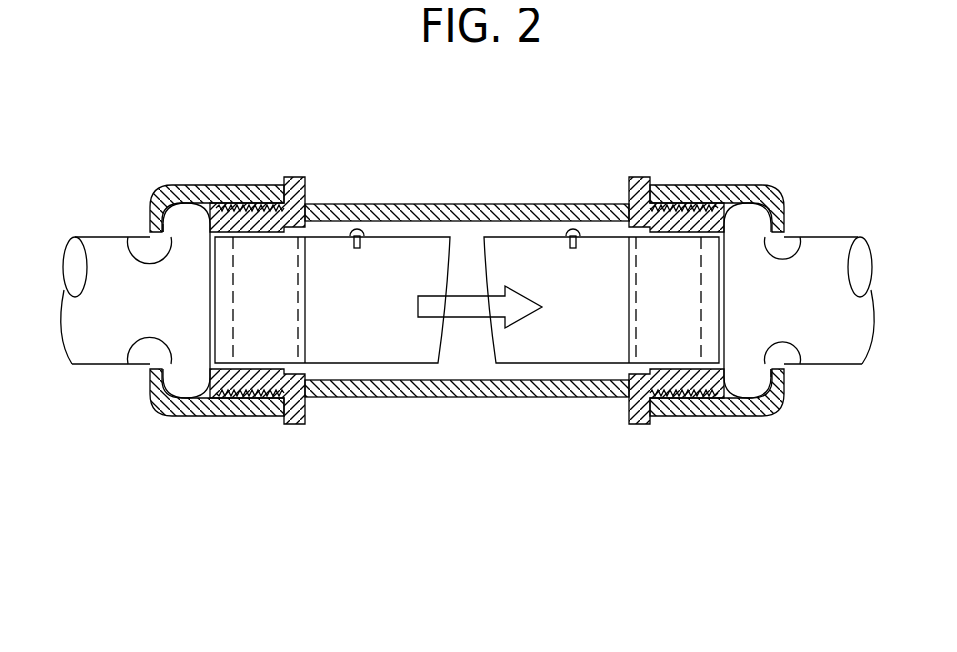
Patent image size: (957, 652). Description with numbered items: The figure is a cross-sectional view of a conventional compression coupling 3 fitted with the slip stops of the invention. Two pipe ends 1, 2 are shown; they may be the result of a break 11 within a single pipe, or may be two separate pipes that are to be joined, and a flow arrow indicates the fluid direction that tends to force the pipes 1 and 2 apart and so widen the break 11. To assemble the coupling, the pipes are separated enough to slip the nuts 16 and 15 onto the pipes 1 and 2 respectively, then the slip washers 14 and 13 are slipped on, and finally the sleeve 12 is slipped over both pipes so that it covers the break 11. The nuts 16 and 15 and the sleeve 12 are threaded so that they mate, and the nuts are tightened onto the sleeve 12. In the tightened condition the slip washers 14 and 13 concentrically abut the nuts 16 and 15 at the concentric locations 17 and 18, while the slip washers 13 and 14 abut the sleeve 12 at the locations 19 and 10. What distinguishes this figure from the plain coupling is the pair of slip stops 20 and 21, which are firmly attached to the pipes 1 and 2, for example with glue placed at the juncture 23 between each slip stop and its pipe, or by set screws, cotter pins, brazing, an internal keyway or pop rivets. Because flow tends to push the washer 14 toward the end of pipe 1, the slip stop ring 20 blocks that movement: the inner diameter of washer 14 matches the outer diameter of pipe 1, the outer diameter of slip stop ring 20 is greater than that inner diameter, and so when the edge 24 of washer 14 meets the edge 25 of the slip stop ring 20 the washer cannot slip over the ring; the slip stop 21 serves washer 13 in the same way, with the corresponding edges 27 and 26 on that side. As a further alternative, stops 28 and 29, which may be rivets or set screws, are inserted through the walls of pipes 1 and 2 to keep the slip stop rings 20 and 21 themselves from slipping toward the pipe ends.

The pipe 1 is at (90, 364).
The pipe 2 is at (846, 364).
The compression coupling 3 is at (467, 345).
The location 10 is at (760, 186).
The break 11 is at (467, 246).
The sleeve 12 is at (400, 204).
The slip washer 13 is at (811, 262).
The slip washer 14 is at (148, 338).
The nut 15 is at (683, 418).
The nut 16 is at (252, 418).
The concentric location 17 is at (133, 262).
The concentric location 18 is at (802, 238).
The location 19 is at (174, 188).
The slip stop ring 20 is at (270, 302).
The slip stop 21 is at (636, 252).
The juncture 23 is at (305, 345).
The edge 24 is at (212, 287).
The edge 25 is at (215, 330).
The ferrule 26 is at (717, 336).
The seal ring 27 is at (663, 300).
The stop 28 is at (358, 229).
The stop 29 is at (571, 229).